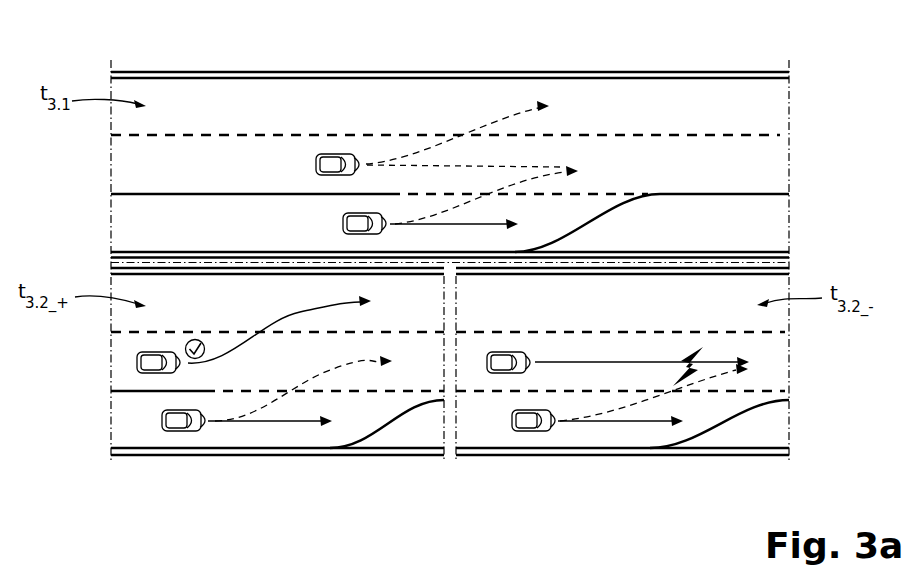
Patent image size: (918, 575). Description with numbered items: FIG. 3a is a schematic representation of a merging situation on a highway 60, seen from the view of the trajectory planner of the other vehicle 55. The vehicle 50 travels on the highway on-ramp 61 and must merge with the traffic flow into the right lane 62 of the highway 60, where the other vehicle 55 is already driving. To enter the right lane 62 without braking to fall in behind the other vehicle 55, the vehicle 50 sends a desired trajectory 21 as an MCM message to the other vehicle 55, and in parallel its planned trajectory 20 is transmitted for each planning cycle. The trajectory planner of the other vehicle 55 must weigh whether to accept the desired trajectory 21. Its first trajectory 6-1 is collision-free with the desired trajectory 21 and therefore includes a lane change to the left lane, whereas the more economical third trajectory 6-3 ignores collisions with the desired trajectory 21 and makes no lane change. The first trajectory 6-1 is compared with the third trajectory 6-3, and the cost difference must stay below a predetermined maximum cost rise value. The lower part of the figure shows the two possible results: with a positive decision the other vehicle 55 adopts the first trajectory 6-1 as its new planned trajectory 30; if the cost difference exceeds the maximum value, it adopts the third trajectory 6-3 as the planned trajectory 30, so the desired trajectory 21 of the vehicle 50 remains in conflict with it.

The highway 60 is at (700, 100).
The right lane 62 is at (132, 163).
The highway on-ramp 61 is at (132, 225).
The other vehicle 55 is at (316, 165).
The vehicle 50 is at (343, 224).
The third trajectory 6-3 is at (433, 167).
The first trajectory 6-1 is at (478, 118).
The planned trajectory 30 is at (243, 362).
The planned trajectory 20 is at (466, 224).
The desired trajectory 21 is at (505, 183).